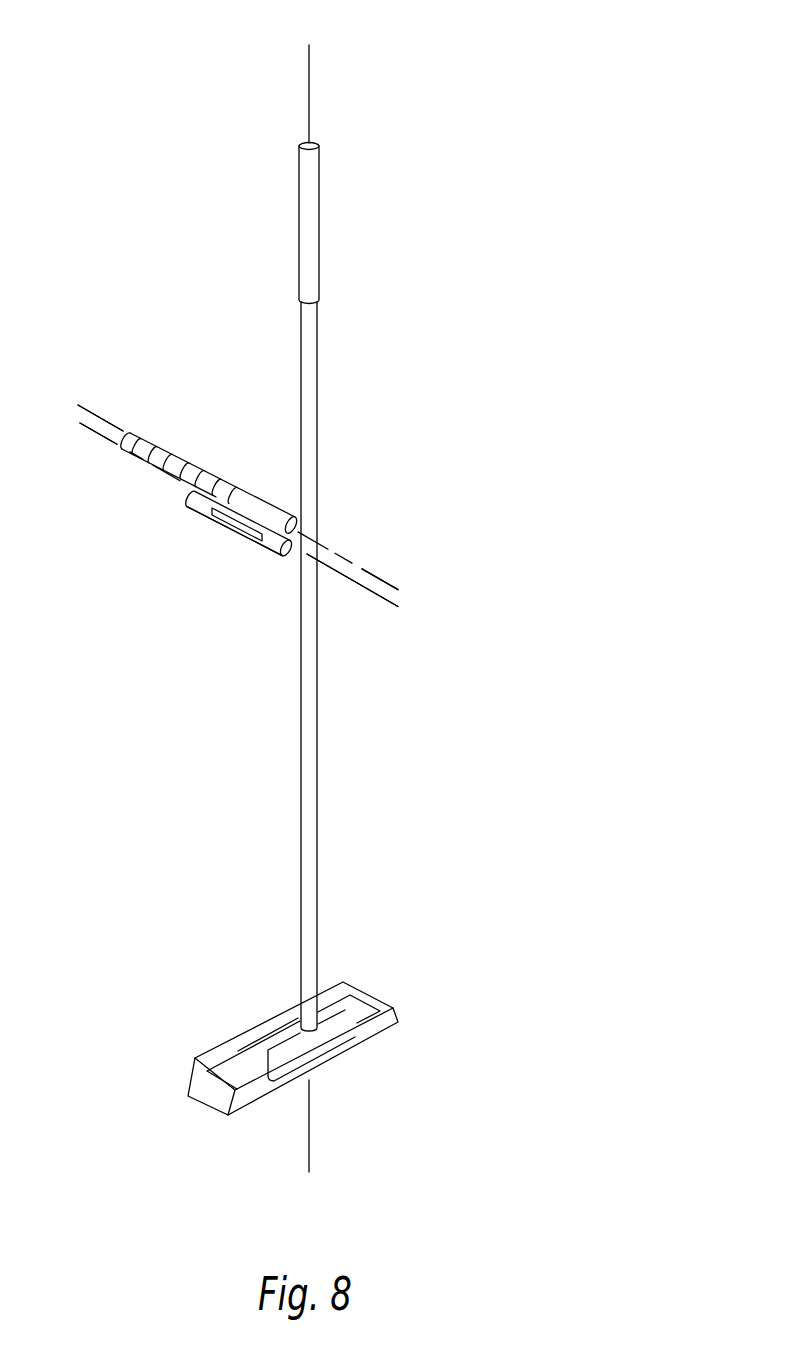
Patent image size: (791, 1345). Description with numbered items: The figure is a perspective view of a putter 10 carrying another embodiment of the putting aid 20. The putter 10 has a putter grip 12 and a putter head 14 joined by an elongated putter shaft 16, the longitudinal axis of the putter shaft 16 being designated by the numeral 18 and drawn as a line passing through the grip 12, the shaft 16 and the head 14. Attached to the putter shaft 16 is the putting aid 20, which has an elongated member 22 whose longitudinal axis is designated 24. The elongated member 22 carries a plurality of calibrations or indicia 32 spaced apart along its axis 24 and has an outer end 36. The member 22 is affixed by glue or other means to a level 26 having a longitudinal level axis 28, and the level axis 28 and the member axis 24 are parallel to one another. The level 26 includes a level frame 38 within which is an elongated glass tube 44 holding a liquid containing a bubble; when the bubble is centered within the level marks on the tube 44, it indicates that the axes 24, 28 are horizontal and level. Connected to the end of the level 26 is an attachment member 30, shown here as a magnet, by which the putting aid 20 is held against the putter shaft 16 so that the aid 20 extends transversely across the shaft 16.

The putter 10 is at (290, 143).
The putter grip 12 is at (312, 200).
The putter head 14 is at (363, 997).
The putter shaft 16 is at (316, 826).
The longitudinal axis of the putter shaft 18 is at (308, 62).
The putting aid 20 is at (114, 368).
The elongated member 22 is at (276, 506).
The longitudinal axis of member 24 is at (365, 568).
The level 26 is at (185, 510).
The longitudinal level axis 28 is at (365, 600).
The attachment member 30 is at (292, 558).
The calibrations or indicia 32 is at (206, 464).
The outer end 36 is at (130, 426).
The level frame 38 is at (270, 547).
The elongated glass tube 44 is at (226, 527).